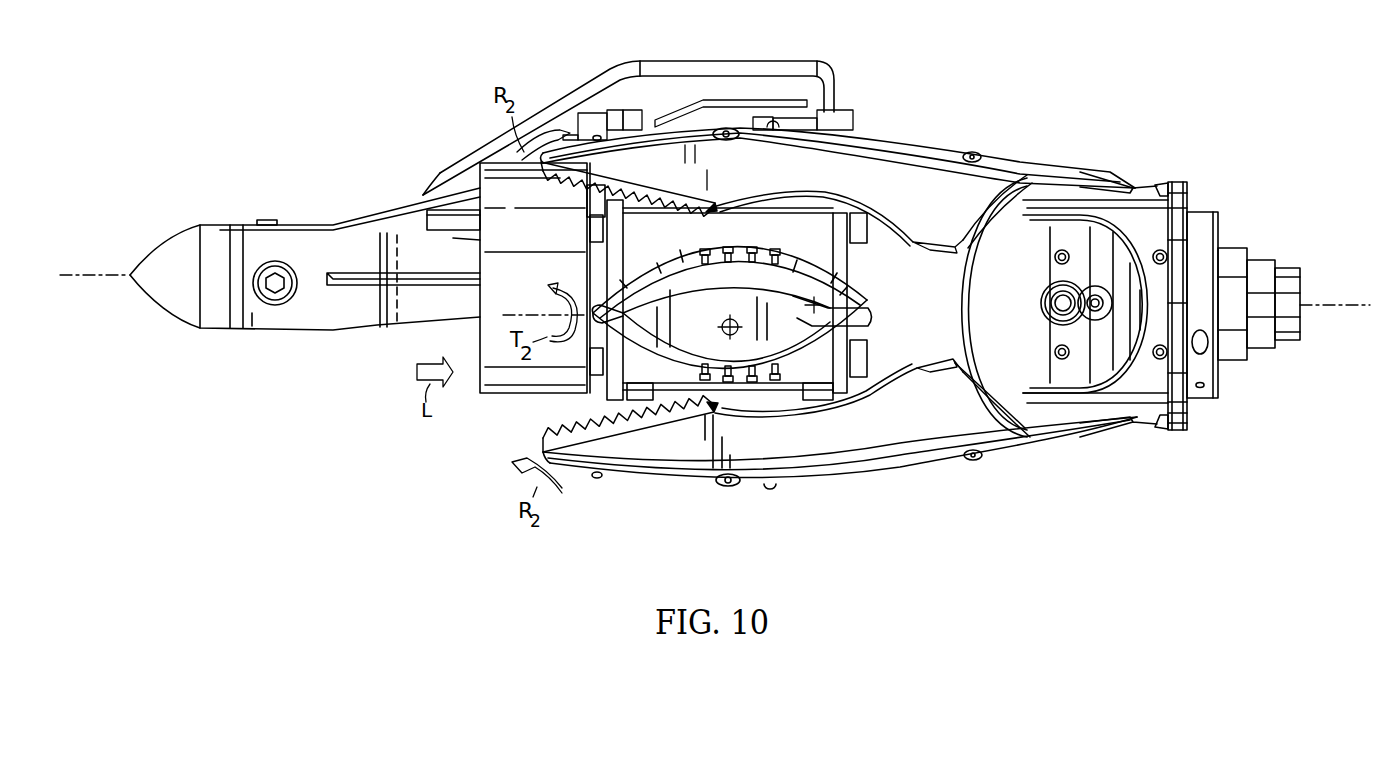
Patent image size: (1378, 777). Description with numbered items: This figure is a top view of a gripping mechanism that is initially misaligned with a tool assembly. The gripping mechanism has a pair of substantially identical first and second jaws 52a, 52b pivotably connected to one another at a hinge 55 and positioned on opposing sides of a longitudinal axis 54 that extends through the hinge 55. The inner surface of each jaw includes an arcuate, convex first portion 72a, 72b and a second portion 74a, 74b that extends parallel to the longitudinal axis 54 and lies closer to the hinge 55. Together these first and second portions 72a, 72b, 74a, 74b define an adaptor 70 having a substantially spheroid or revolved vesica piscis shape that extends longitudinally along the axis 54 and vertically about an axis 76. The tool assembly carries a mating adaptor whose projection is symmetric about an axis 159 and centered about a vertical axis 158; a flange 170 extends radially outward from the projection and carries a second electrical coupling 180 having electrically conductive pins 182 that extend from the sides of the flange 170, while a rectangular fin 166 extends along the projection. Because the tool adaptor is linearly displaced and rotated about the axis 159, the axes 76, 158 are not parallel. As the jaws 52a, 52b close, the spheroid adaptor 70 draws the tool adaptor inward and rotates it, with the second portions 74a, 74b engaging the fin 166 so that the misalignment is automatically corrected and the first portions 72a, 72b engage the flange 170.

The first jaw 52a is at (915, 133).
The second jaw 52b is at (916, 480).
The adaptor 70 is at (840, 189).
The first portion 72a is at (789, 207).
The first portion 72b is at (790, 410).
The second portion 74a is at (930, 256).
The second portion 74b is at (932, 357).
The hinge 55 is at (1044, 306).
The longitudinal axis 54 is at (517, 313).
The axis 159 is at (1353, 303).
The vertical axis 158 is at (722, 331).
The fin 166 is at (867, 333).
The flange 170 is at (682, 278).
The second electrical coupling 180 is at (750, 237).
The electrically conductive pins 182 is at (782, 373).
The axis 76 is at (811, 306).